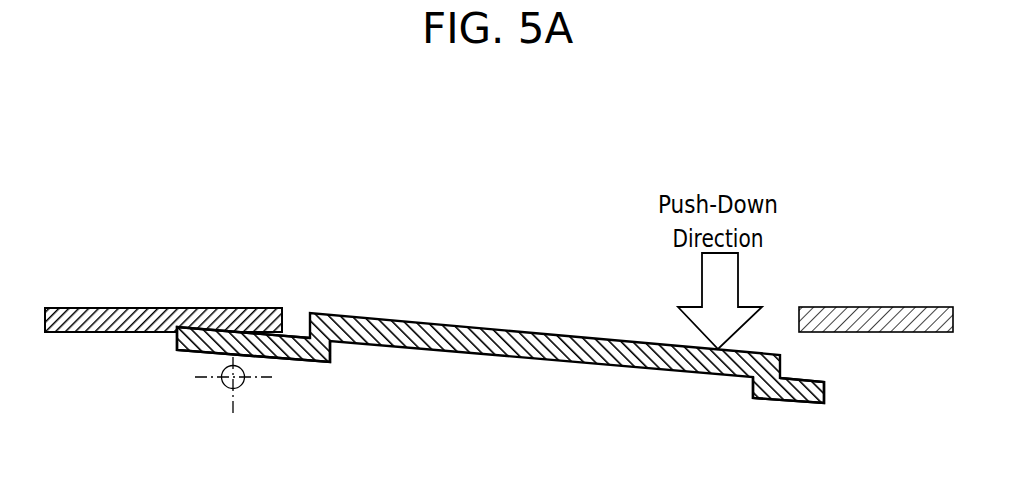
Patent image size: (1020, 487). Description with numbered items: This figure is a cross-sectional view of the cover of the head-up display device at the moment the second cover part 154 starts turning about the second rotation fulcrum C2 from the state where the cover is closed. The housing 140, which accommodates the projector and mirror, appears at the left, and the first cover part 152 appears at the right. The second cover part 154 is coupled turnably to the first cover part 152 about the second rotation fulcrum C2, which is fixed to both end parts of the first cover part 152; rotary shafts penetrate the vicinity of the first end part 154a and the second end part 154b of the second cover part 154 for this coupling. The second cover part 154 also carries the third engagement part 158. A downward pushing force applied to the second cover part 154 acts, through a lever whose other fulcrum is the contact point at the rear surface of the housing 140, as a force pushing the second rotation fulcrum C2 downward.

The housing 140 is at (167, 308).
The first cover part 152 is at (877, 307).
The second cover part 154 is at (543, 333).
The first end part 154a is at (287, 371).
The second end part 154b is at (303, 362).
The third engagement part 158 is at (809, 404).
The second rotation fulcrum C2 is at (222, 383).